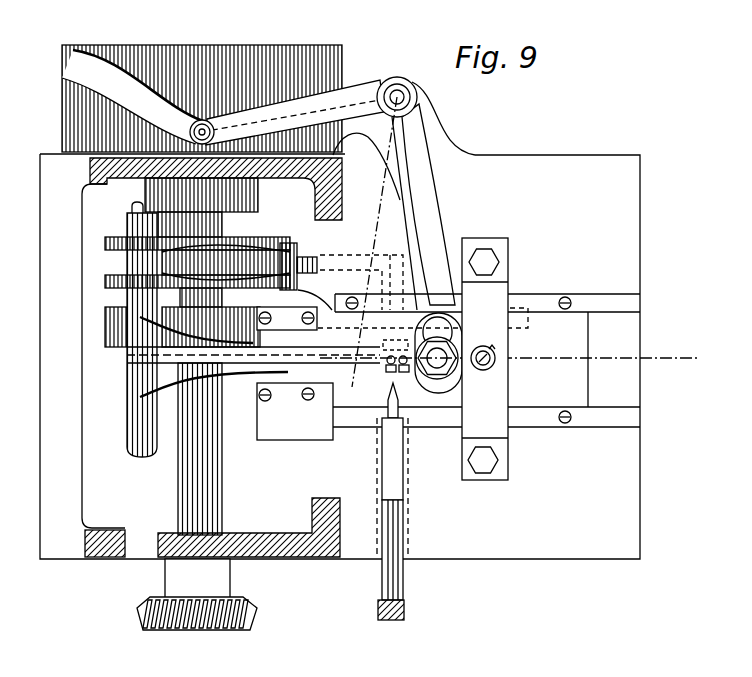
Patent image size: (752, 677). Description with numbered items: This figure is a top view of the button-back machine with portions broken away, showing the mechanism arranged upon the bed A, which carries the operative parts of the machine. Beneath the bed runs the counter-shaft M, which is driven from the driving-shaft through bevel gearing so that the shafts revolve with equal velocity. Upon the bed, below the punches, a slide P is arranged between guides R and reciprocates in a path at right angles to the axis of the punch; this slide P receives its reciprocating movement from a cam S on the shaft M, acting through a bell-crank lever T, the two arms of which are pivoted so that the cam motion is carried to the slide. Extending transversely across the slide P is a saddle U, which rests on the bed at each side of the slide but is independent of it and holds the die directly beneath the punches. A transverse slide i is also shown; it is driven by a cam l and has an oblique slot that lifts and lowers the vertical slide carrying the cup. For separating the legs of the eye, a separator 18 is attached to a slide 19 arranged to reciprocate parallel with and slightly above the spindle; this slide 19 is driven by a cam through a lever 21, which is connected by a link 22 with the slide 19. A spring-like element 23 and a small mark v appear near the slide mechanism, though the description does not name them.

The separator 18 is at (403, 388).
The slide 19 is at (392, 488).
The lever 21 is at (388, 622).
The link 22 is at (403, 578).
The spring 23 is at (226, 262).
The cam S is at (202, 98).
The bell-crank lever T is at (326, 235).
The guides R is at (486, 360).
The slide P is at (569, 359).
The saddle U is at (485, 359).
The counter-shaft M is at (201, 356).
The bed A is at (340, 356).
The cam l is at (253, 373).
The slide i is at (479, 367).
The mark v is at (492, 341).